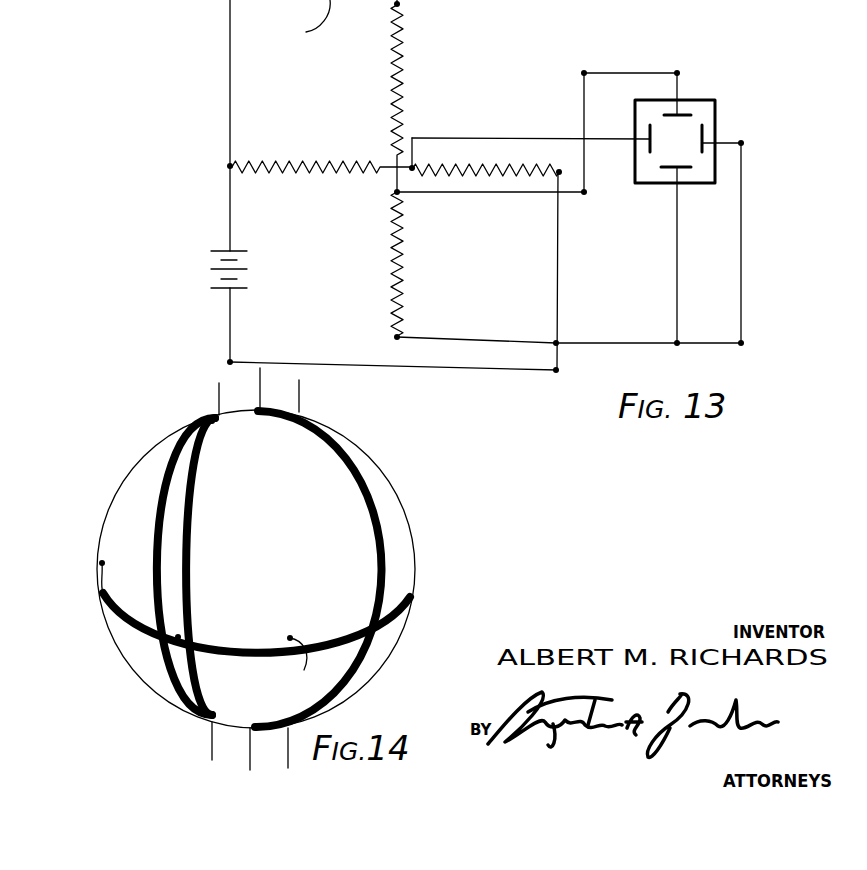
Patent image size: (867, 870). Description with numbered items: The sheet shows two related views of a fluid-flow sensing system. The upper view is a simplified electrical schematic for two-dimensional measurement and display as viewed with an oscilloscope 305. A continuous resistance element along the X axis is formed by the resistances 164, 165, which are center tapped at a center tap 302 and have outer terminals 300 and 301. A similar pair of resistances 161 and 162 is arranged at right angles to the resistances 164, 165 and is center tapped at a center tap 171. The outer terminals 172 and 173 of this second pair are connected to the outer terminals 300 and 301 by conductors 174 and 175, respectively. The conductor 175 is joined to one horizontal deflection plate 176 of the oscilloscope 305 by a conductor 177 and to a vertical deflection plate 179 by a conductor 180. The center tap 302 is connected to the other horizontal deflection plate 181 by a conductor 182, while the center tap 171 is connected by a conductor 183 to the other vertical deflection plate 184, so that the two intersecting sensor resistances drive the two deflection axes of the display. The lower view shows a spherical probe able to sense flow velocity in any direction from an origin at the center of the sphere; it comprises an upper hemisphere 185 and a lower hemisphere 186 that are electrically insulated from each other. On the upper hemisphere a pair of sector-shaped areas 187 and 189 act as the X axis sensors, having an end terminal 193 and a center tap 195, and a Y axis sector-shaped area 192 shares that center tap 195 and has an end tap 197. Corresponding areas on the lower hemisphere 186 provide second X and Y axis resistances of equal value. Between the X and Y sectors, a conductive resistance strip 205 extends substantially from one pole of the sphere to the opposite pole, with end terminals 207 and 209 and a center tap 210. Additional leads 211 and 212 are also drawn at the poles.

In FIG. 13, the resistance 161 is at (392, 70).
In FIG. 13, the resistance 162 is at (392, 264).
In FIG. 13, the resistance element 164 is at (304, 141).
In FIG. 13, the resistance element 165 is at (495, 168).
In FIG. 13, the center tap 171 is at (397, 192).
In FIG. 13, the outer terminal 172 is at (400, 5).
In FIG. 13, the outer terminal 173 is at (390, 336).
In FIG. 13, the conductor 174 is at (230, 38).
In FIG. 13, the conductor 175 is at (556, 281).
In FIG. 13, the horizontal deflection plate 176 is at (715, 134).
In FIG. 13, the conductor 177 is at (742, 281).
In FIG. 13, the vertical deflection plate 179 is at (680, 192).
In FIG. 13, the conductor 180 is at (676, 305).
In FIG. 13, the horizontal deflection plate 181 is at (648, 136).
In FIG. 13, the conductor 182 is at (566, 137).
In FIG. 13, the conductor 183 is at (641, 60).
In FIG. 13, the vertical deflection plate 184 is at (681, 104).
In FIG. 14, the upper hemisphere 185 is at (398, 490).
In FIG. 14, the lower hemisphere 186 is at (372, 660).
In FIG. 14, the sector-shaped area 187 is at (120, 497).
In FIG. 14, the sector-shaped area 189 is at (384, 548).
In FIG. 14, the sector-shaped area 192 is at (312, 557).
In FIG. 14, the end terminal 193 is at (100, 563).
In FIG. 14, the center tap 195 is at (258, 383).
In FIG. 14, the end tap 197 is at (270, 665).
In FIG. 14, the conductive resistance strip 205 is at (188, 508).
In FIG. 14, the end terminal 207 is at (212, 421).
In FIG. 14, the end terminal 209 is at (208, 716).
In FIG. 14, the center tap 210 is at (180, 637).
In FIG. 14, the lead 211 is at (218, 395).
In FIG. 14, the lead 212 is at (210, 752).
In FIG. 13, the outer terminal 300 is at (230, 165).
In FIG. 13, the outer terminal 301 is at (578, 196).
In FIG. 13, the center tap 302 is at (412, 168).
In FIG. 13, the oscilloscope 305 is at (718, 105).